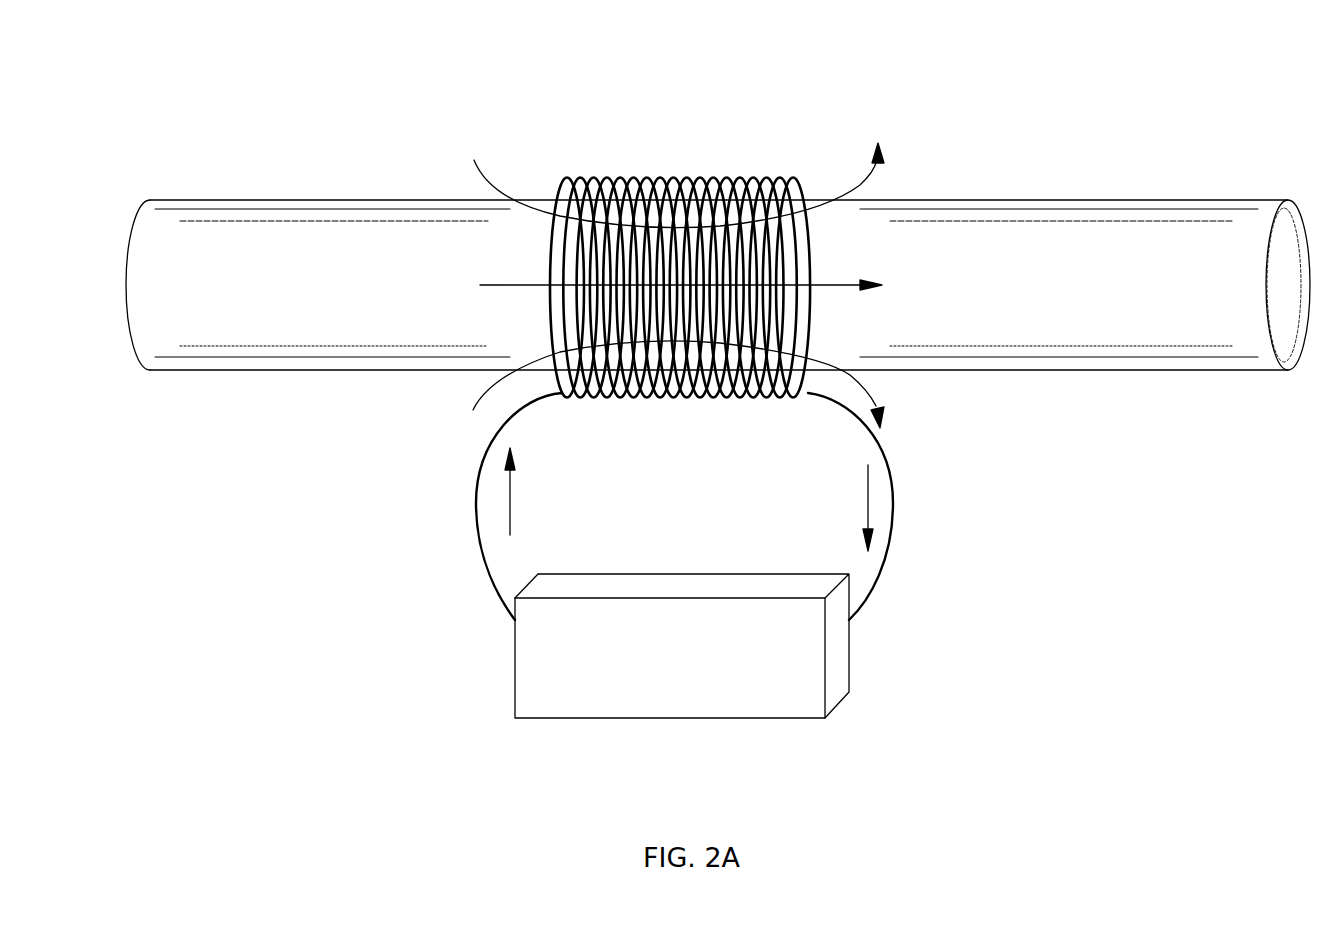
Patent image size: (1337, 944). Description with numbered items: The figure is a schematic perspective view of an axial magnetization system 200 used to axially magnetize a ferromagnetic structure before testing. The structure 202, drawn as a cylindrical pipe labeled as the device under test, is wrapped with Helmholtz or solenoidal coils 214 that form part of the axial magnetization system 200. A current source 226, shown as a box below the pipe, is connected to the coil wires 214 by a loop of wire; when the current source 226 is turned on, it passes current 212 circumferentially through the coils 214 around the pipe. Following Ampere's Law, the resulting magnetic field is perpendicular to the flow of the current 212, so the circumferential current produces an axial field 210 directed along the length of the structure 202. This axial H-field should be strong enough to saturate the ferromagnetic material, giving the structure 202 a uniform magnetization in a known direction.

The axial magnetization system 200 is at (1085, 86).
The structure 202 is at (1225, 200).
The coils 214 is at (733, 178).
The axial field 210 is at (872, 181).
The current 212 is at (893, 503).
The current source 226 is at (790, 718).